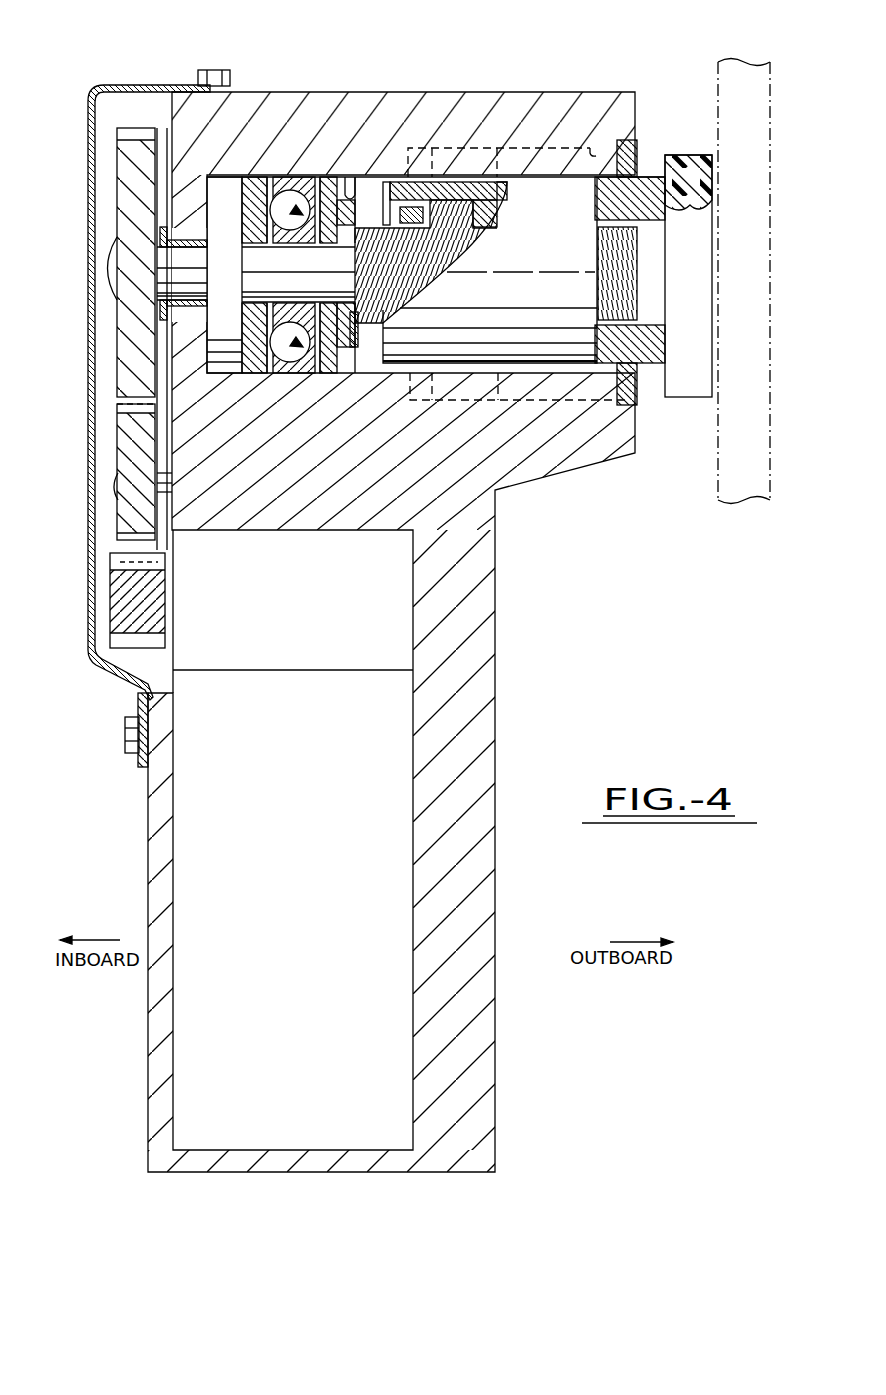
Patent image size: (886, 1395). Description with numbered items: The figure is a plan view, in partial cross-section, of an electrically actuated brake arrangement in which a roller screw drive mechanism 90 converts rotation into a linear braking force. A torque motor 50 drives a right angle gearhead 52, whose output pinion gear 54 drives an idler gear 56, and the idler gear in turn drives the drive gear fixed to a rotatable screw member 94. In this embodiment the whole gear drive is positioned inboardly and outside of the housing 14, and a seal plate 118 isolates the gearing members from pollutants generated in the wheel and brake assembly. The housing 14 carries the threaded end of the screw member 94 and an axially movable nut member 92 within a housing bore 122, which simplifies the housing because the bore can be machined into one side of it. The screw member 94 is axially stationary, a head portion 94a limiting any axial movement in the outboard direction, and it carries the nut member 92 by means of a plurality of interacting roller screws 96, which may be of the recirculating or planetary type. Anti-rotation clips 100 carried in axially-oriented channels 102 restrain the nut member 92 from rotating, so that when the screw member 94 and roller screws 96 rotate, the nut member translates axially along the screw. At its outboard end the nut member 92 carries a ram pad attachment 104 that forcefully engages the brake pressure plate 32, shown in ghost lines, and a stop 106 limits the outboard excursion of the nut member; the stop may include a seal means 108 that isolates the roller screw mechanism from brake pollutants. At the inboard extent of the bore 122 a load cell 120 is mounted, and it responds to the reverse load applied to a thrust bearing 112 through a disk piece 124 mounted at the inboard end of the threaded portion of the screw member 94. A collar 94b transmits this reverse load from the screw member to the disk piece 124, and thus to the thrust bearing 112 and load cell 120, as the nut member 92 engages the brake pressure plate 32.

The housing 14 is at (495, 598).
The brake pressure plate 32 is at (742, 68).
The torque motor 50 is at (303, 872).
The right angle gearhead 52 is at (303, 612).
The pinion gear 54 is at (112, 602).
The idler gear 56 is at (125, 461).
The roller screw drive mechanism 90 is at (672, 88).
The nut member 92 is at (553, 187).
The screw member 94 is at (175, 254).
The head portion 94a is at (106, 289).
The collar 94b is at (355, 316).
The roller screws 96 is at (447, 193).
The anti-rotation clips 100 is at (470, 147).
The channels 102 is at (596, 160).
The ram pad attachment 104 is at (700, 254).
The stop 106 is at (630, 400).
The seal means 108 is at (637, 366).
The thrust bearing 112 is at (298, 175).
The seal plate 118 is at (100, 88).
The load cell 120 is at (229, 370).
The housing bore 122 is at (358, 177).
The disk piece 124 is at (356, 318).